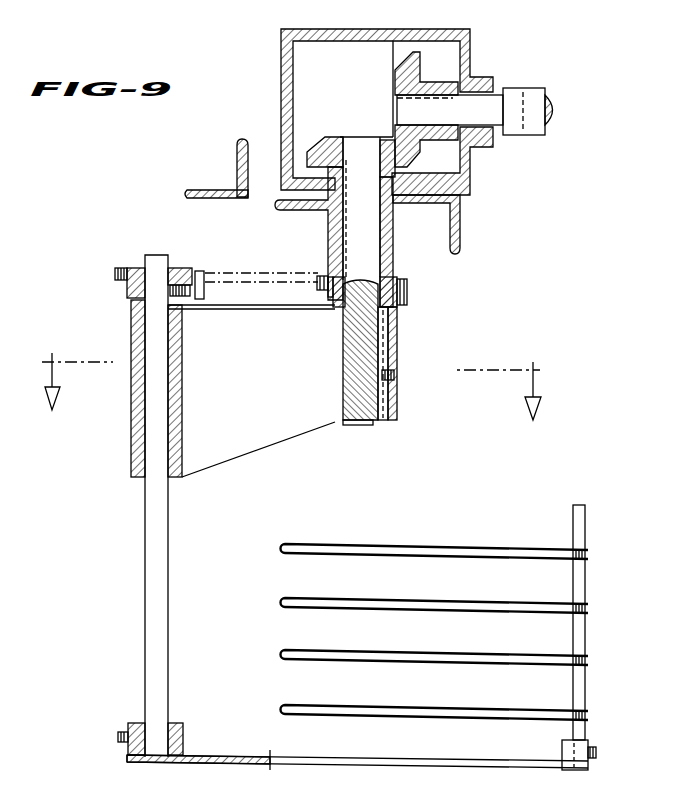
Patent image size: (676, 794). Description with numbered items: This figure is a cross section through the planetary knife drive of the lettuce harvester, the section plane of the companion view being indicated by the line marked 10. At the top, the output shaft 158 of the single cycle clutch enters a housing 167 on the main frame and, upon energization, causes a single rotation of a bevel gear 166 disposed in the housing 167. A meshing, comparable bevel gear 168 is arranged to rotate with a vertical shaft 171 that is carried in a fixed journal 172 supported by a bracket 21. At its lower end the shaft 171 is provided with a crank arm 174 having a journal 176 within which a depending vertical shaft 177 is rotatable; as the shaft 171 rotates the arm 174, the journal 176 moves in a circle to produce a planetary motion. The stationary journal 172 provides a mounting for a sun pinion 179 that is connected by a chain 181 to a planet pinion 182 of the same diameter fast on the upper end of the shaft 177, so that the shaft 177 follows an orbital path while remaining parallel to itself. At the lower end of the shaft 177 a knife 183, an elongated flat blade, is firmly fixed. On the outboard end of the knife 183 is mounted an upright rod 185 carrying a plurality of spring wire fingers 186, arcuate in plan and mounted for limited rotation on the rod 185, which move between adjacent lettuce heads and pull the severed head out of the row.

The housing 167 is at (281, 73).
The bevel gear 166 is at (407, 71).
The bevel gear 168 is at (318, 148).
The output shaft 158 is at (554, 105).
The fixed journal 172 is at (390, 218).
The bracket 21 is at (462, 238).
The sun pinion 179 is at (320, 279).
The vertical shaft 171 is at (363, 425).
The journal 176 is at (182, 412).
The crank arm 174 is at (262, 448).
The vertical shaft 177 is at (145, 434).
The planet pinion 182 is at (188, 270).
The chain 181 is at (260, 270).
The knife 183 is at (246, 728).
The upright rod 185 is at (586, 634).
The spring wire fingers 186 is at (511, 517).
The section line 10- 10 is at (320, 379).